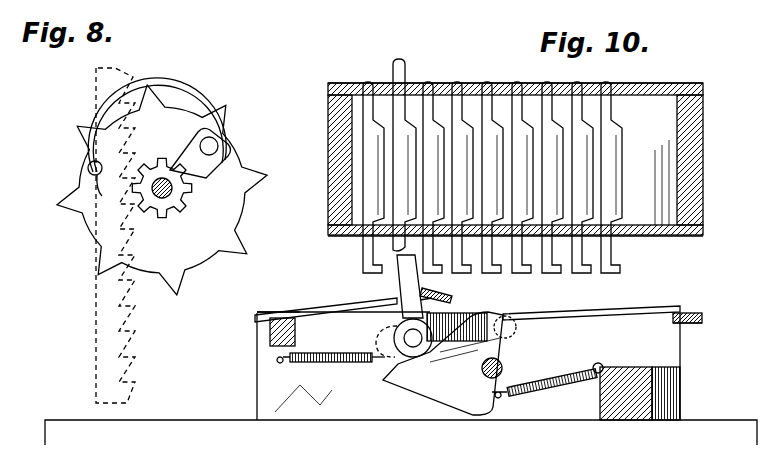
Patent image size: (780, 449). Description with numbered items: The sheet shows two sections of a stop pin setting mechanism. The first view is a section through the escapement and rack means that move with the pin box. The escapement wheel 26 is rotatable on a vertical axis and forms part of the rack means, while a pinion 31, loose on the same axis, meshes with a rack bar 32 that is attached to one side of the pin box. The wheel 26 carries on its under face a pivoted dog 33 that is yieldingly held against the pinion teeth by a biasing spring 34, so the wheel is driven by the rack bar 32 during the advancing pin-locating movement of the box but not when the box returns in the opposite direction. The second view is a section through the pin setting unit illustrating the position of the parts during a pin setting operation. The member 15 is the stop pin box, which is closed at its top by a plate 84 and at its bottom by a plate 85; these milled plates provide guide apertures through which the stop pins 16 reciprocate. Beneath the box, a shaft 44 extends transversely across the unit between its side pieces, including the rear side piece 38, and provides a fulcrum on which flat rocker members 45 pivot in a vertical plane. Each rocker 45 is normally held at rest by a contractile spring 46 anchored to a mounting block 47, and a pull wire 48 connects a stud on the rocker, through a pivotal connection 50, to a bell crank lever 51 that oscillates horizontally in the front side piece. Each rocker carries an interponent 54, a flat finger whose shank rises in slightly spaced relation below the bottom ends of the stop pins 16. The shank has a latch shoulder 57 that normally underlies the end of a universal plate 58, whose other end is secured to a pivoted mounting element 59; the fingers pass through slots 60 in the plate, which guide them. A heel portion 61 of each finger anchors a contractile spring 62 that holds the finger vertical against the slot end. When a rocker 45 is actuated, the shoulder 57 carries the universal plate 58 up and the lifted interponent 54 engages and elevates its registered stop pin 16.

In FIG. 8, the escapement wheel 26 is at (196, 270).
In FIG. 8, the pinion 31 is at (190, 190).
In FIG. 8, the rack bar 32 is at (96, 318).
In FIG. 8, the pivoted dog 33 is at (226, 138).
In FIG. 8, the biasing spring 34 is at (164, 134).
In FIG. 10, the member 15 is at (713, 168).
In FIG. 10, the stop pins 16 is at (405, 130).
In FIG. 10, the plate 84 is at (686, 76).
In FIG. 10, the plate 85 is at (644, 226).
In FIG. 10, the interponent 54 is at (397, 283).
In FIG. 10, the latch shoulder 57 is at (454, 300).
In FIG. 10, the universal plate 58 is at (330, 309).
In FIG. 10, the mounting element 59 is at (270, 332).
In FIG. 10, the slots 60 is at (300, 310).
In FIG. 10, the heel portion 61 is at (388, 337).
In FIG. 10, the contractile spring 62 is at (348, 364).
In FIG. 10, the rocker members 45 is at (444, 392).
In FIG. 10, the shaft 44 is at (505, 371).
In FIG. 10, the contractile spring 46 is at (547, 386).
In FIG. 10, the mounting block 47 is at (632, 367).
In FIG. 10, the pull wire 48 is at (636, 310).
In FIG. 10, the pivotal connection 50 is at (690, 311).
In FIG. 10, the bell crank lever 51 is at (703, 318).
In FIG. 10, the rear side piece 38 is at (683, 357).